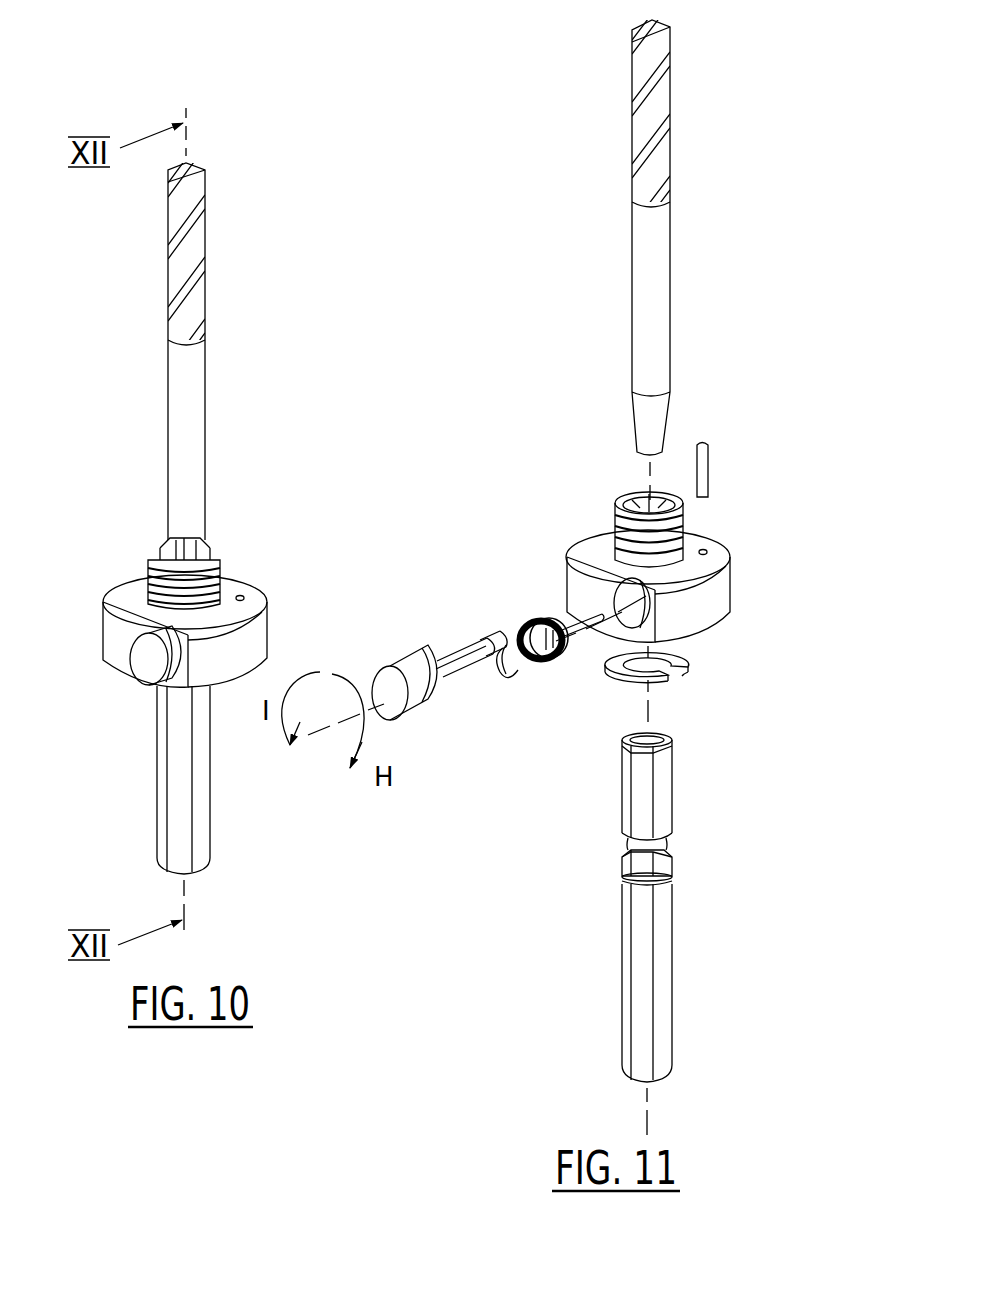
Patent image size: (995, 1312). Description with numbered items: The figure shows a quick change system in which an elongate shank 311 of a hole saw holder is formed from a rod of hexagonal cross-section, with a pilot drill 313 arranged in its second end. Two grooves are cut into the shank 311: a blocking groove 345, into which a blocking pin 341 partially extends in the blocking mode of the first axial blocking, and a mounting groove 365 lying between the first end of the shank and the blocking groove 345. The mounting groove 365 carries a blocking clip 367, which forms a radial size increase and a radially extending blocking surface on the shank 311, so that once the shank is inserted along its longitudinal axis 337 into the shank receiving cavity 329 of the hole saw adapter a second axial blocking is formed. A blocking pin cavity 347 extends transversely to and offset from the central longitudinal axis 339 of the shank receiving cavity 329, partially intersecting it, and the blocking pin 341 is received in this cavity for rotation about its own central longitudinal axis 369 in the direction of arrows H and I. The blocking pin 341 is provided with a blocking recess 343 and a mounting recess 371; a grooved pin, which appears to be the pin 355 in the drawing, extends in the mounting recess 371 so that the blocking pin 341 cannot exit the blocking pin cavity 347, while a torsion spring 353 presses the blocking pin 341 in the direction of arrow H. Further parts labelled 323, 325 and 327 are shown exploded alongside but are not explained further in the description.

In FIG. 11, the elongate shank 311 is at (604, 898).
In FIG. 10, the pilot drill 313 is at (228, 368).
In FIG. 11, the pilot drill 313 is at (608, 225).
In FIG. 11, the receiving socket 323 is at (640, 740).
In FIG. 11, the drill shank 325 is at (650, 413).
In FIG. 10, the housing body 327 is at (252, 632).
In FIG. 11, the shank receiving cavity 329 is at (614, 488).
In FIG. 10, the longitudinal axis 337 is at (186, 890).
In FIG. 11, the longitudinal axis 337 is at (649, 1094).
In FIG. 11, the central longitudinal axis 339 is at (649, 480).
In FIG. 10, the blocking pin 341 is at (150, 660).
In FIG. 11, the blocking recess 343 is at (455, 665).
In FIG. 11, the blocking groove 345 is at (615, 805).
In FIG. 11, the blocking pin cavity 347 is at (612, 630).
In FIG. 11, the torsion spring 353 is at (544, 612).
In FIG. 11, the index pin 355 is at (705, 468).
In FIG. 11, the mounting groove 365 is at (614, 842).
In FIG. 11, the blocking clip 367 is at (690, 678).
In FIG. 11, the central longitudinal axis 369 is at (358, 680).
In FIG. 11, the mounting recess 371 is at (505, 655).